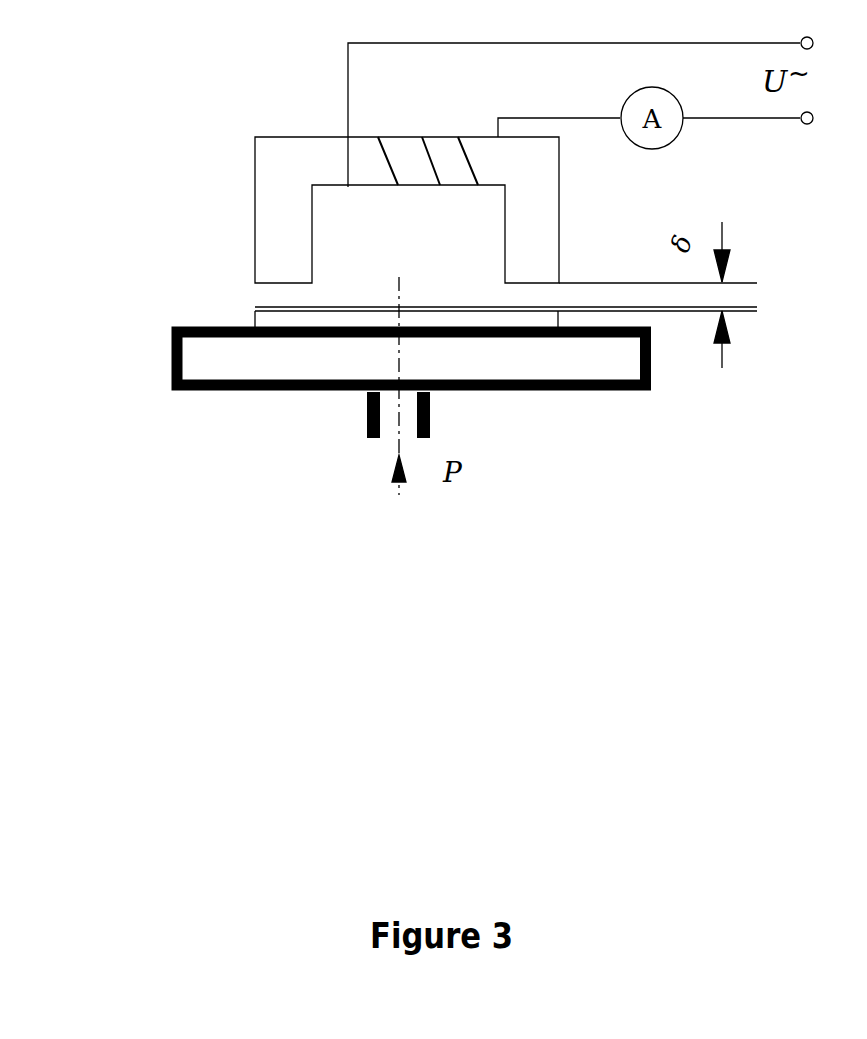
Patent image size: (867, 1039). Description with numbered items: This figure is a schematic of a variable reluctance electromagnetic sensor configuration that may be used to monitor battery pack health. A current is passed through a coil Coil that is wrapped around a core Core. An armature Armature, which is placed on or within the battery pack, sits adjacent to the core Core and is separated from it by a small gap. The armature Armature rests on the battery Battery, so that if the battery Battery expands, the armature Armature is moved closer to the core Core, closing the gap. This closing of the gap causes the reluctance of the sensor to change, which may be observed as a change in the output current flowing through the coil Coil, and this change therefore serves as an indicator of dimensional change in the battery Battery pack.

The coil Coil is at (348, 98).
The core Core is at (255, 195).
The armature Armature is at (255, 317).
The battery Battery is at (163, 362).